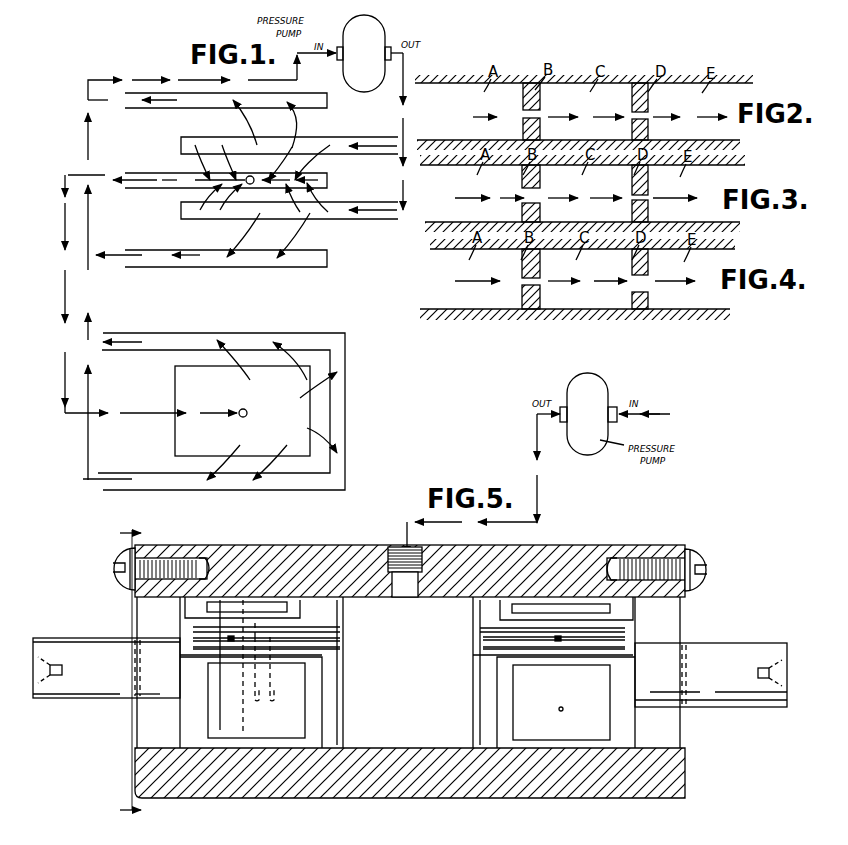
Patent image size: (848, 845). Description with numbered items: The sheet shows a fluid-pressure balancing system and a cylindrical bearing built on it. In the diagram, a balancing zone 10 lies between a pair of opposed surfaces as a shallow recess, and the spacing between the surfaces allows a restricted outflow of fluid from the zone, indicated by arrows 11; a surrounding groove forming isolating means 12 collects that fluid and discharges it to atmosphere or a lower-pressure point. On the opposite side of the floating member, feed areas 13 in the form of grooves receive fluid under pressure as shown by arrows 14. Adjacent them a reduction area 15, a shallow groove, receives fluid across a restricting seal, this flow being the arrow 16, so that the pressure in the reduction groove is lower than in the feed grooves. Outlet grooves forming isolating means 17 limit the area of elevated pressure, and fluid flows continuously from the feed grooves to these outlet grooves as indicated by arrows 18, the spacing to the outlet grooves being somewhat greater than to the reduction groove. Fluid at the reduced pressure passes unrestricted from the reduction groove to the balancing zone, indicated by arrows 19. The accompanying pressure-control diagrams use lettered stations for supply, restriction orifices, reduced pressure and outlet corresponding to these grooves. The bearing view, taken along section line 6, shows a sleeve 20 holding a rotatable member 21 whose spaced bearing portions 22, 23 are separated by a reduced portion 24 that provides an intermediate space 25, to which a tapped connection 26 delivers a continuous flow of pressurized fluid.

In FIG. 5, the section line 6 is at (130, 674).
In FIG. 1, the balancing zone 10 is at (302, 398).
In FIG. 1, the outflow arrows 11 is at (303, 350).
In FIG. 1, the isolating means 12 is at (345, 420).
In FIG. 1, the feed areas 13 is at (343, 144).
In FIG. 1, the fluid admission arrows 14 is at (367, 147).
In FIG. 1, the reduction area 15 is at (145, 173).
In FIG. 1, the restricted flow arrow 16 is at (320, 190).
In FIG. 1, the isolating means 17 is at (313, 94).
In FIG. 1, the flow arrows 18 is at (297, 138).
In FIG. 1, the unrestricted flow arrows 19 is at (65, 297).
In FIG. 5, the sleeve 20 is at (580, 553).
In FIG. 5, the rotatable member 21 is at (727, 700).
In FIG. 5, the bearing portion 22 is at (638, 735).
In FIG. 5, the bearing portion 23 is at (348, 730).
In FIG. 5, the reduced portion 24 is at (440, 735).
In FIG. 5, the intermediate space 25 is at (420, 753).
In FIG. 5, the tapped connection 26 is at (393, 549).